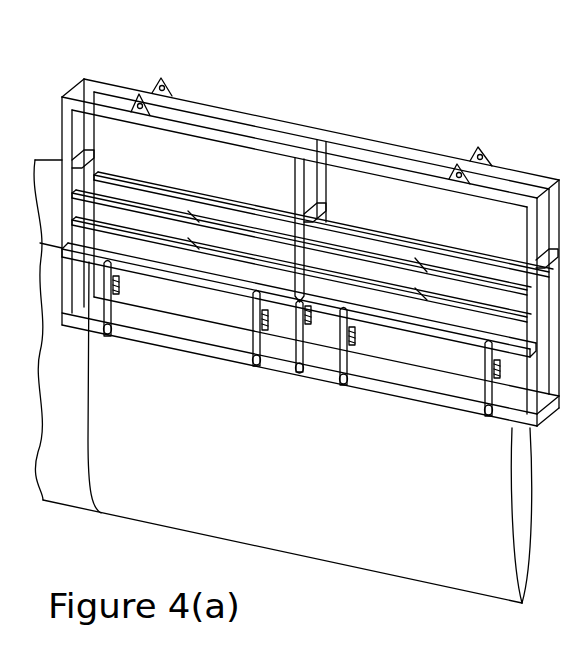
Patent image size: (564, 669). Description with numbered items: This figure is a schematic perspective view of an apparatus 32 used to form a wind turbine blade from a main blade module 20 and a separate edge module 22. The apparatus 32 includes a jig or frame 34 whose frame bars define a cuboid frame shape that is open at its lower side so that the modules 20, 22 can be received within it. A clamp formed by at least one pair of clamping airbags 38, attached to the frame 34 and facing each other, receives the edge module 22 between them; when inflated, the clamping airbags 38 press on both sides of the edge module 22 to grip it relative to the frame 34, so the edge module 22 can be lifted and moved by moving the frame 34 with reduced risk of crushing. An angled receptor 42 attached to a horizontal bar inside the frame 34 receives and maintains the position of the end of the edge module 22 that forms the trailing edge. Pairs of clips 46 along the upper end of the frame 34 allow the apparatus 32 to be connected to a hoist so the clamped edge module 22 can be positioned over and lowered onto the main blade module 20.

The main blade module 20 is at (372, 572).
The separate edge module 22 is at (53, 160).
The apparatus 32 is at (357, 110).
The frame 34 is at (283, 112).
The clamping airbags 38 is at (88, 265).
The angled receptor 42 is at (215, 193).
The clips 46 is at (482, 150).